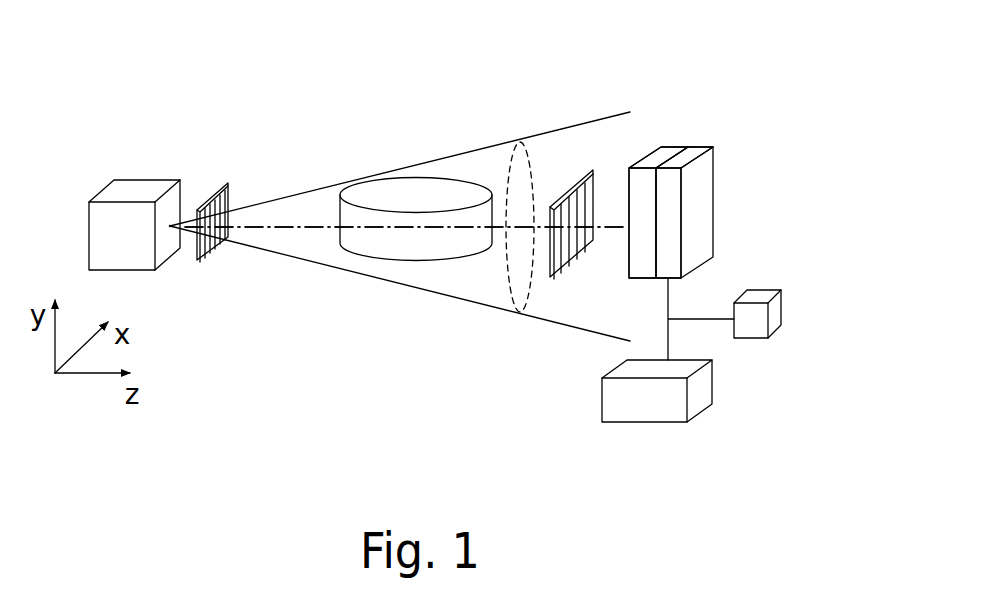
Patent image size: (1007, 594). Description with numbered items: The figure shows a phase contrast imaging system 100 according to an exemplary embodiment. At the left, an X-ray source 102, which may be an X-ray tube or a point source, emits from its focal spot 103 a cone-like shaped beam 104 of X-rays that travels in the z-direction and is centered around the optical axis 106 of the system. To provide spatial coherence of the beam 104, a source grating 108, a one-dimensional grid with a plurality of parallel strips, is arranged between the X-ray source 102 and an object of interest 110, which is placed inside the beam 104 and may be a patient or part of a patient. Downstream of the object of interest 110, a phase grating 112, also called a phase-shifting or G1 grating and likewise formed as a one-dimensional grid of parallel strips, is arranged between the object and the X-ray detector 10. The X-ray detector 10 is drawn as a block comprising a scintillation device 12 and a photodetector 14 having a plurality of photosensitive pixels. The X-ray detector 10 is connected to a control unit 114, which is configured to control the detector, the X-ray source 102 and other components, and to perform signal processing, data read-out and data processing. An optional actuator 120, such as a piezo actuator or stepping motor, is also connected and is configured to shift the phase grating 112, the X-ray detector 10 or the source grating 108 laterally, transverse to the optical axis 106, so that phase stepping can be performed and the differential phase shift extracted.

The phase contrast imaging system 100 is at (458, 105).
The X-ray source 102 is at (142, 163).
The focal spot 103 is at (170, 226).
The beam 104 is at (268, 200).
The optical axis 106 is at (298, 228).
The source grating 108 is at (208, 258).
The object of interest 110 is at (420, 260).
The phase grating 112 is at (552, 280).
The X-ray detector 10 is at (710, 138).
The scintillation device 12 is at (663, 157).
The photodetector 14 is at (673, 200).
The actuator 120 is at (775, 309).
The control unit 114 is at (643, 402).